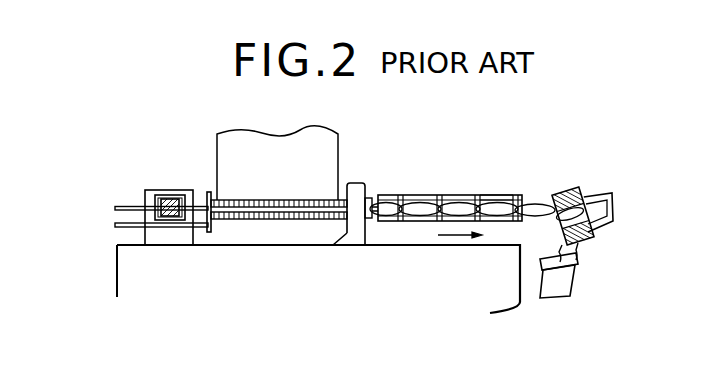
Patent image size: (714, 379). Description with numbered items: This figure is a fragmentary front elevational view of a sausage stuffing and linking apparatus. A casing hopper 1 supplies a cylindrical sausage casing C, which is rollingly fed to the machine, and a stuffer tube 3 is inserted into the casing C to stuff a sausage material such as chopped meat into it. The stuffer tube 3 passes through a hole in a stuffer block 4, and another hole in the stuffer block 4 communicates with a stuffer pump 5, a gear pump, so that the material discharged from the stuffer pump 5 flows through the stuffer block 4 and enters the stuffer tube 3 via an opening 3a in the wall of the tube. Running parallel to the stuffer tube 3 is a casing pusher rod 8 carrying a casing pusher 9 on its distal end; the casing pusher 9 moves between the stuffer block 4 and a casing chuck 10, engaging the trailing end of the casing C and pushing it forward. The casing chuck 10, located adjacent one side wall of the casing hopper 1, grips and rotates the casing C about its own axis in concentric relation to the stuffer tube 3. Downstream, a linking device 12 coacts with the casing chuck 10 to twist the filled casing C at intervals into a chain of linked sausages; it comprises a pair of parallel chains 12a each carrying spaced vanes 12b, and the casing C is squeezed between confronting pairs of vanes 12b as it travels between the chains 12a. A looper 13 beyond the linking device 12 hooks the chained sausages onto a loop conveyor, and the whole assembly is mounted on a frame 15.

The casing hopper 1 is at (216, 153).
The stuffer tube 3 is at (130, 207).
The opening 3a is at (168, 217).
The stuffer block 4 is at (168, 195).
The stuffer pump 5 is at (185, 238).
The casing pusher rod 8 is at (120, 223).
The casing pusher 9 is at (206, 190).
The cylindrical sausage casing C is at (307, 199).
The casing chuck 10 is at (372, 193).
The linking device 12 is at (453, 191).
The parallel chains 12a is at (500, 194).
The vanes 12b is at (478, 195).
The looper 13 is at (592, 186).
The frame 15 is at (117, 245).